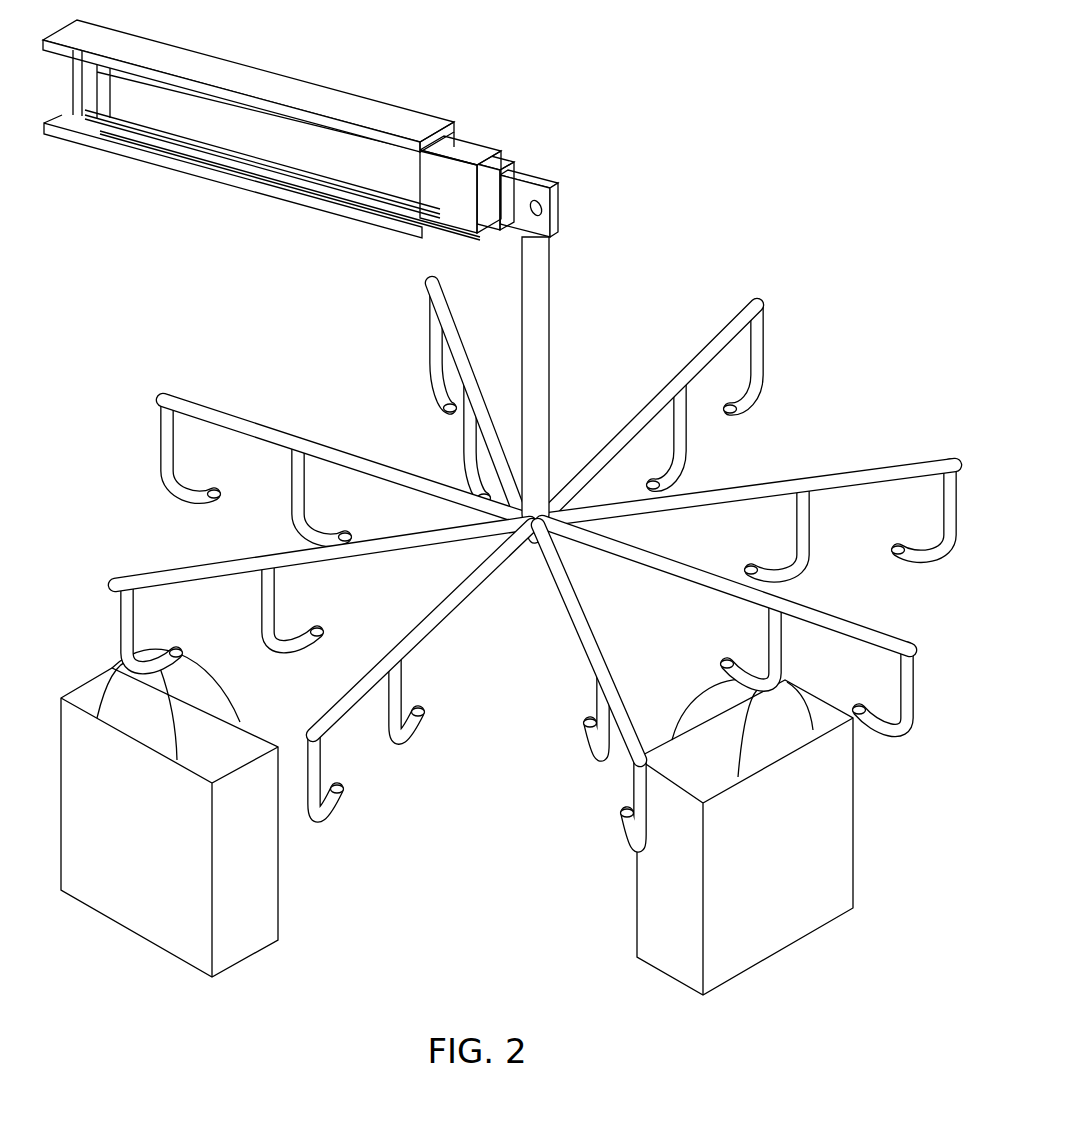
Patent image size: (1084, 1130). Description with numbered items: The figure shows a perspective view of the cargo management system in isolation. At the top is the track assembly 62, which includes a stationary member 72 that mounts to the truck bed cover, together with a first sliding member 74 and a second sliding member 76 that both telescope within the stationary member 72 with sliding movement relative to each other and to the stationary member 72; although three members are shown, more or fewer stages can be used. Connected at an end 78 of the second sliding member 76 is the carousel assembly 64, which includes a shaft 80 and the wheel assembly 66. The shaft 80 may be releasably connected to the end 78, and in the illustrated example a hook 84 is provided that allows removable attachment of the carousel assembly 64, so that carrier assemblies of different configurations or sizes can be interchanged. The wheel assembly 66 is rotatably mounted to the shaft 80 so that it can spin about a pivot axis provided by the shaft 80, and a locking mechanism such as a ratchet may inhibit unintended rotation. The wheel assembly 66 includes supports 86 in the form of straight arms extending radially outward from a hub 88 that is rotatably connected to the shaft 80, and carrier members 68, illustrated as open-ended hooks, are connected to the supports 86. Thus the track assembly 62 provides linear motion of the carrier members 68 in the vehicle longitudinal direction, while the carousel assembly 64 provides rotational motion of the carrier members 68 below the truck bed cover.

The track assembly 62 is at (321, 122).
The carousel assembly 64 is at (653, 330).
The wheel assembly 66 is at (783, 425).
The carrier members 68 is at (322, 777).
The stationary member 72 is at (330, 88).
The first sliding member 74 is at (463, 143).
The second sliding member 76 is at (500, 182).
The end 78 is at (549, 186).
The shaft 80 is at (553, 307).
The hook 84 is at (543, 211).
The supports 86 is at (225, 417).
The hub 88 is at (527, 548).